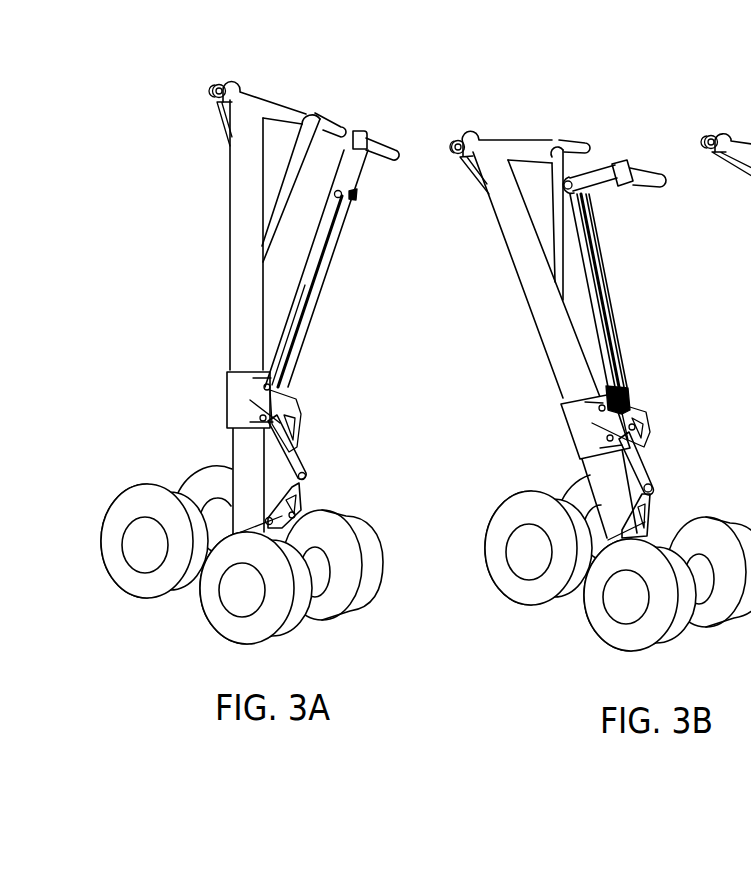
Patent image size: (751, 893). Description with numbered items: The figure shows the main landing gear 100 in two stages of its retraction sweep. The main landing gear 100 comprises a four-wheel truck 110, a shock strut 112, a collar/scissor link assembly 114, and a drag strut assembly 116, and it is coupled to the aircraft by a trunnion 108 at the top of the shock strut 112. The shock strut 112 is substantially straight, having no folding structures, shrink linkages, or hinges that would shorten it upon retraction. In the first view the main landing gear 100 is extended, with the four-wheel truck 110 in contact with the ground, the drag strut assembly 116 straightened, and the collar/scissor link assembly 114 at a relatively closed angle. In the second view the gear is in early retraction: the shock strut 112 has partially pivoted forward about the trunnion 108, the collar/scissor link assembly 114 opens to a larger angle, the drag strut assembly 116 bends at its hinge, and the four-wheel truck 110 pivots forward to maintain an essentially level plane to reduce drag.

In FIG. 3A, the main landing gear 100 is at (383, 118).
In FIG. 3B, the main landing gear 100 is at (649, 143).
In FIG. 3A, the trunnion 108 is at (268, 106).
In FIG. 3B, the trunnion 108 is at (513, 147).
In FIG. 3A, the four-wheel truck 110 is at (175, 481).
In FIG. 3B, the four-wheel truck 110 is at (528, 501).
In FIG. 3A, the shock strut 112 is at (229, 282).
In FIG. 3B, the shock strut 112 is at (537, 323).
In FIG. 3A, the collar/scissor link assembly 114 is at (298, 468).
In FIG. 3B, the collar/scissor link assembly 114 is at (644, 478).
In FIG. 3A, the drag strut assembly 116 is at (338, 253).
In FIG. 3B, the drag strut assembly 116 is at (603, 280).